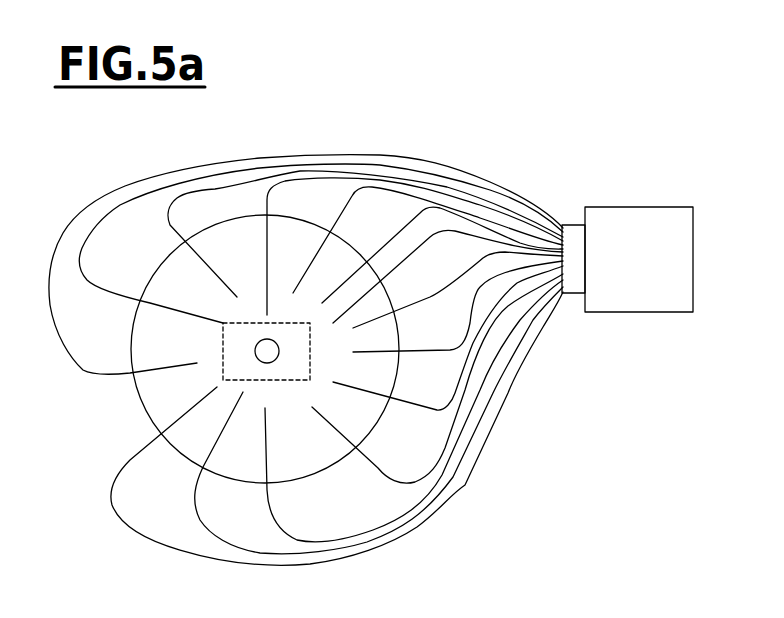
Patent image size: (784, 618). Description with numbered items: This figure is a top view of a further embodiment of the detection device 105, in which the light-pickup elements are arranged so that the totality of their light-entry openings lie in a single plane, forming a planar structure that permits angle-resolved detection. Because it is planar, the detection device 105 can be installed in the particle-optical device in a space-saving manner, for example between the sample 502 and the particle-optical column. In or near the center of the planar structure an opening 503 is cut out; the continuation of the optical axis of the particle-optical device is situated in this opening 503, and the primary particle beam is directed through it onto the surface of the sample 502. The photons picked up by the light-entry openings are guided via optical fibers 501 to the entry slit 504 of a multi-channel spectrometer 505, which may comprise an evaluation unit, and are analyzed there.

The detection device 105 is at (612, 242).
The optical fibers 501 is at (380, 470).
The sample 502 is at (222, 364).
The opening 503 is at (255, 353).
The entry slit 504 is at (572, 281).
The multi-channel spectrometer 505 is at (673, 285).